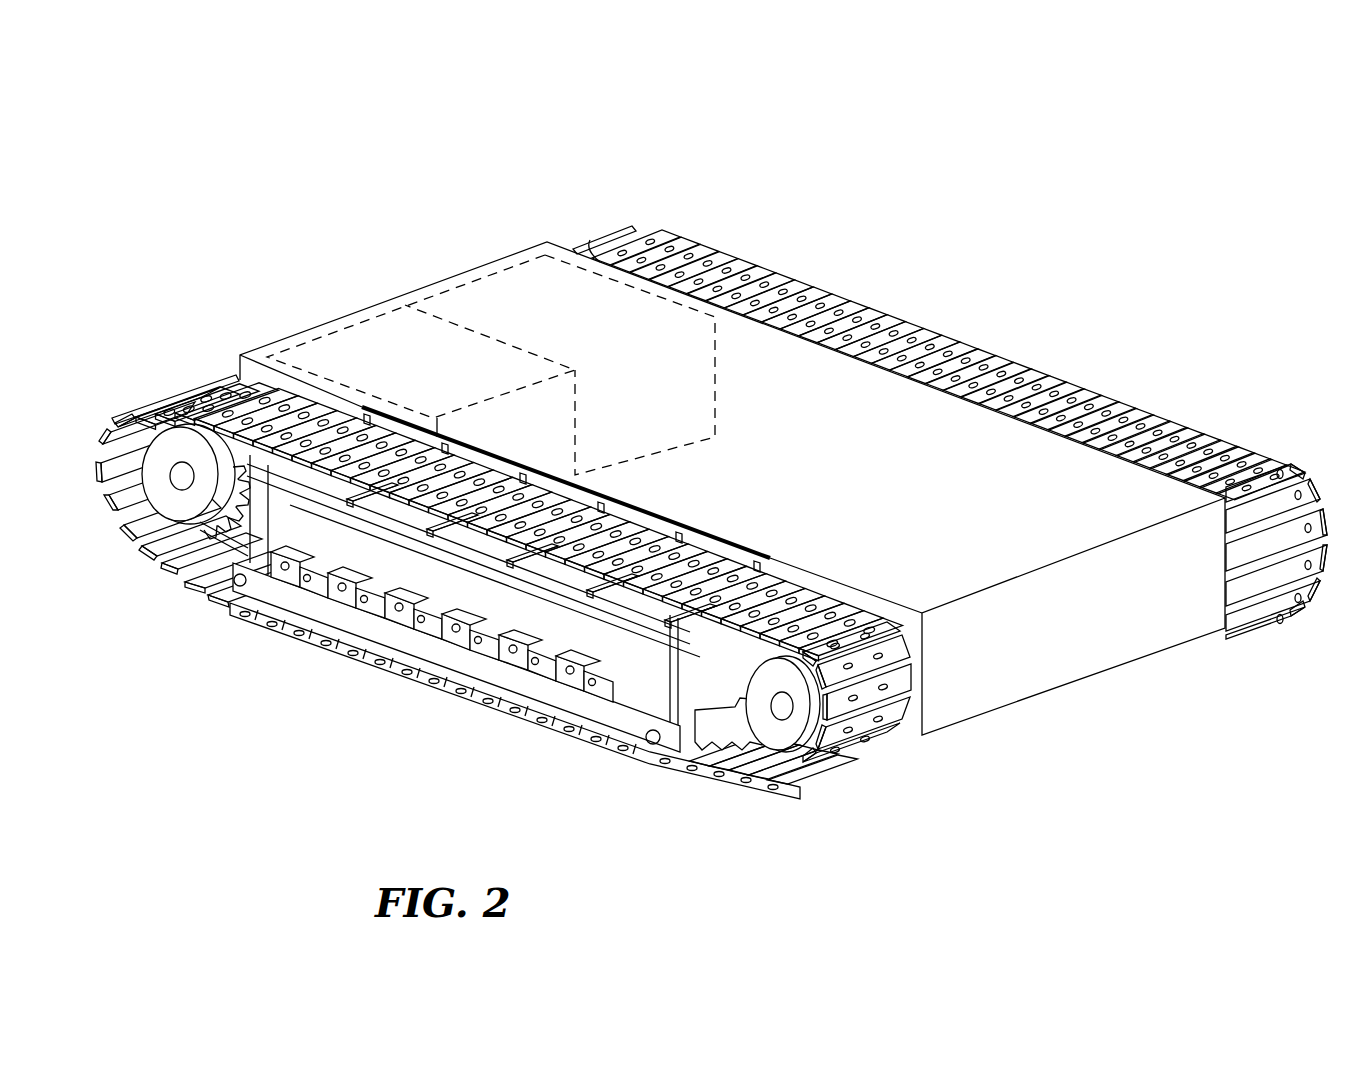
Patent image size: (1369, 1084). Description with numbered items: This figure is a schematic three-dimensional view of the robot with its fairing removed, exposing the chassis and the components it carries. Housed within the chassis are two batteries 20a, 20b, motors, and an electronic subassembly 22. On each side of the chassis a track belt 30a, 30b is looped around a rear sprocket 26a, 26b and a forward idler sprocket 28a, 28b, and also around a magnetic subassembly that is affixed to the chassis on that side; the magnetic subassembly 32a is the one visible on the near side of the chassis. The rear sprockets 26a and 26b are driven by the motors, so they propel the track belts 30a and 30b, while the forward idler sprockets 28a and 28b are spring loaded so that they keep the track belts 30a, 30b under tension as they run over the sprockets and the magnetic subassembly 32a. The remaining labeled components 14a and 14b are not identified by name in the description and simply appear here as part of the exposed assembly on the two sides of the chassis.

The first track 14a is at (137, 407).
The second track 14b is at (831, 303).
The battery 20a is at (382, 343).
The battery 20b is at (530, 300).
The electronic subassembly 22 is at (866, 473).
The rear sprocket 26a is at (780, 737).
The rear sprocket 26b is at (1260, 508).
The forward idler sprocket 28a is at (183, 507).
The forward idler sprocket 28b is at (697, 240).
The track belt 30a is at (225, 397).
The track belt 30b is at (617, 235).
The magnetic subassembly 32a is at (400, 697).